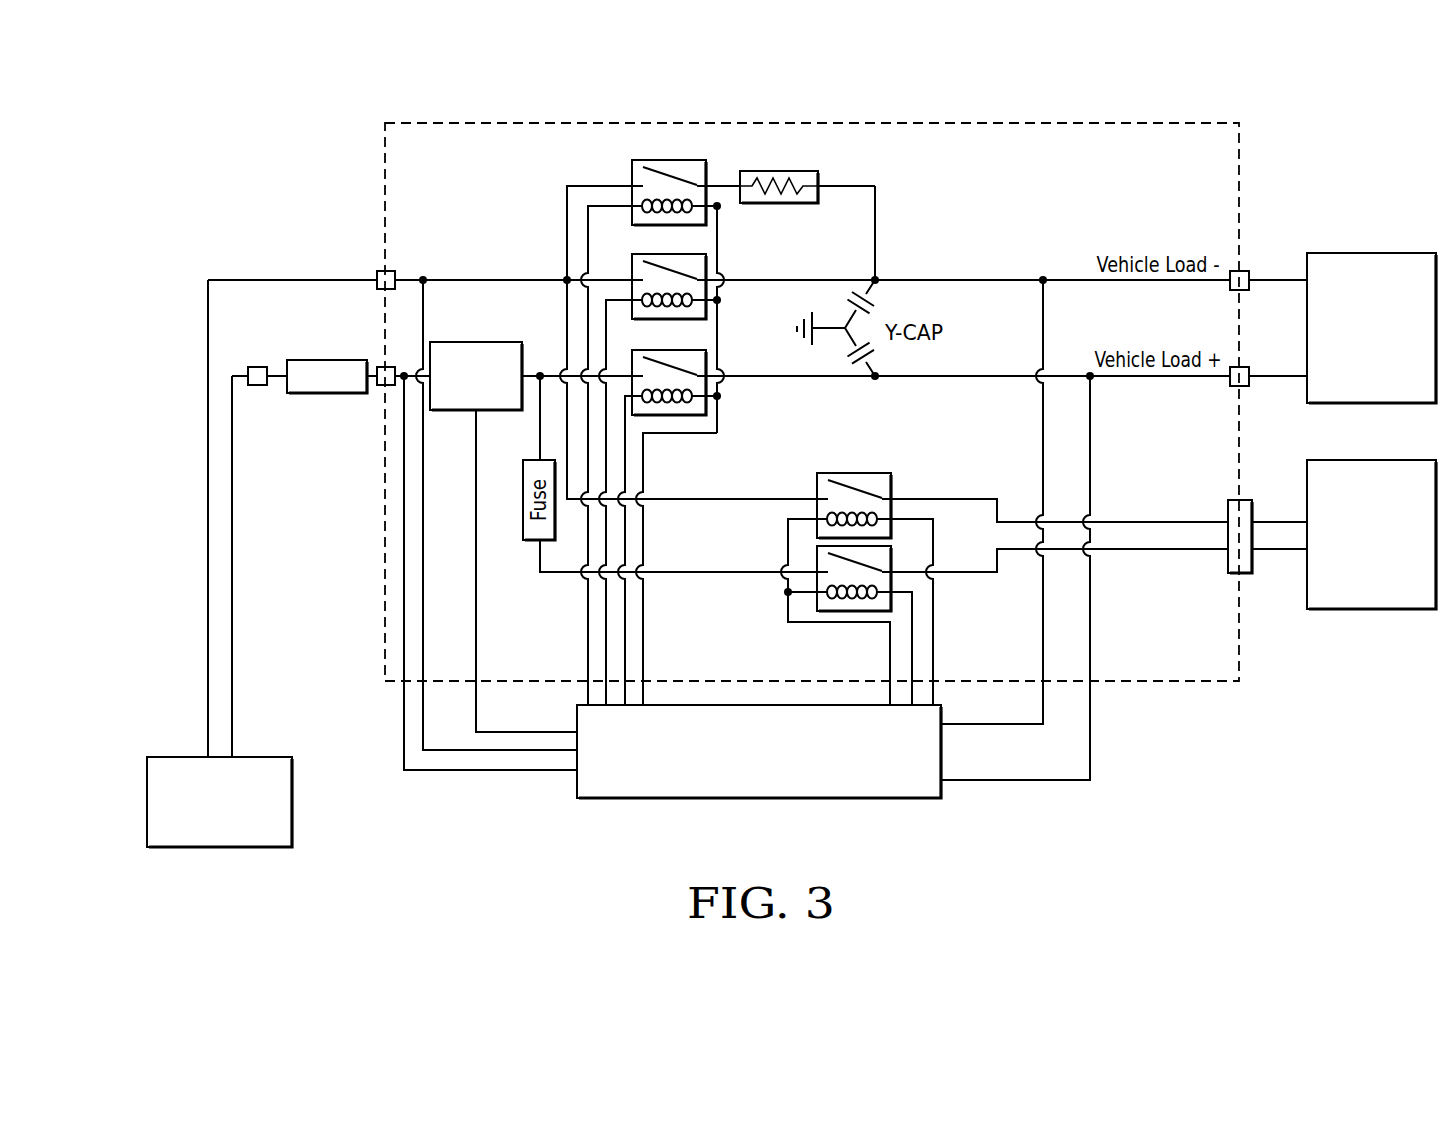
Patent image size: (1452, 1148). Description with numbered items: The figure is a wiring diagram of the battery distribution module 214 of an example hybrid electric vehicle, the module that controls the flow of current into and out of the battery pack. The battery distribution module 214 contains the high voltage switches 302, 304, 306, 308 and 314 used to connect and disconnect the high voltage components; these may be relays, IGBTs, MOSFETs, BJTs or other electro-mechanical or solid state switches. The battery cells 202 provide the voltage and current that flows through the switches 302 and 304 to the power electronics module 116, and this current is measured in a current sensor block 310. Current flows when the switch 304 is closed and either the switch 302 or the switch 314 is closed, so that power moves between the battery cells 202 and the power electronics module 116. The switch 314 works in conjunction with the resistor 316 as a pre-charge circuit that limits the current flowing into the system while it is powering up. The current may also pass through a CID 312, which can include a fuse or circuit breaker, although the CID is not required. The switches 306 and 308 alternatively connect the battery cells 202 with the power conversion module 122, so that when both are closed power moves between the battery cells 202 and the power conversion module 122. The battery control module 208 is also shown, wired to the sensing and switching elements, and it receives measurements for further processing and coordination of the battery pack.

The battery distribution module 214 is at (838, 123).
The battery cells 202 is at (218, 847).
The battery control module 208 is at (758, 798).
The power electronics module 116 is at (1371, 253).
The power conversion module 122 is at (1371, 460).
The current sensor block 310 is at (503, 342).
The CID 312 is at (340, 360).
The switch 314 is at (632, 174).
The resistor 316 is at (778, 171).
The switch 302 is at (706, 312).
The switch 304 is at (706, 408).
The switch 306 is at (855, 473).
The switch 308 is at (853, 611).